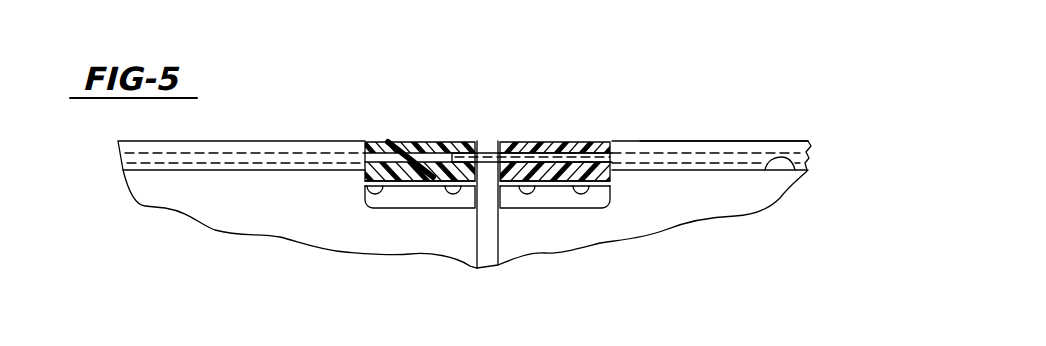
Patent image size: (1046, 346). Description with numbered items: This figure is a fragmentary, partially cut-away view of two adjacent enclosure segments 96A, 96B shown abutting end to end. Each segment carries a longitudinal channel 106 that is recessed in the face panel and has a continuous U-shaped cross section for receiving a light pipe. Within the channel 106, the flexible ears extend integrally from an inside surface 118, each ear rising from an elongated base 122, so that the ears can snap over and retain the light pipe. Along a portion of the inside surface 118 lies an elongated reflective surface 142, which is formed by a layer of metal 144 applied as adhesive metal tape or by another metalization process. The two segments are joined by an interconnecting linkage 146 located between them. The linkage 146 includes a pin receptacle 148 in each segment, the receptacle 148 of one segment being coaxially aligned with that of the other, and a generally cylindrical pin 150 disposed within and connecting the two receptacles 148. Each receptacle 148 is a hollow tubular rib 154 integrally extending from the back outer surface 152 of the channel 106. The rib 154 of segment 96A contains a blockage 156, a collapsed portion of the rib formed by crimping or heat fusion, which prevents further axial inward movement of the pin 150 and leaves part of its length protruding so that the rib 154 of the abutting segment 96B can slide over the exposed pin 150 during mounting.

The enclosure segment 96A is at (248, 143).
The enclosure segment 96B is at (790, 143).
The channel 106 is at (350, 225).
The inside surface 118 is at (520, 190).
The base 122 is at (410, 205).
The reflective surface 142 is at (383, 173).
The metal layer 144 is at (428, 147).
The interconnecting linkage 146 is at (453, 143).
The pin receptacle 148 is at (565, 157).
The pin 150 is at (490, 200).
The back outer surface 152 is at (790, 160).
The tubular rib 154 is at (697, 157).
The blockage 156 is at (427, 153).